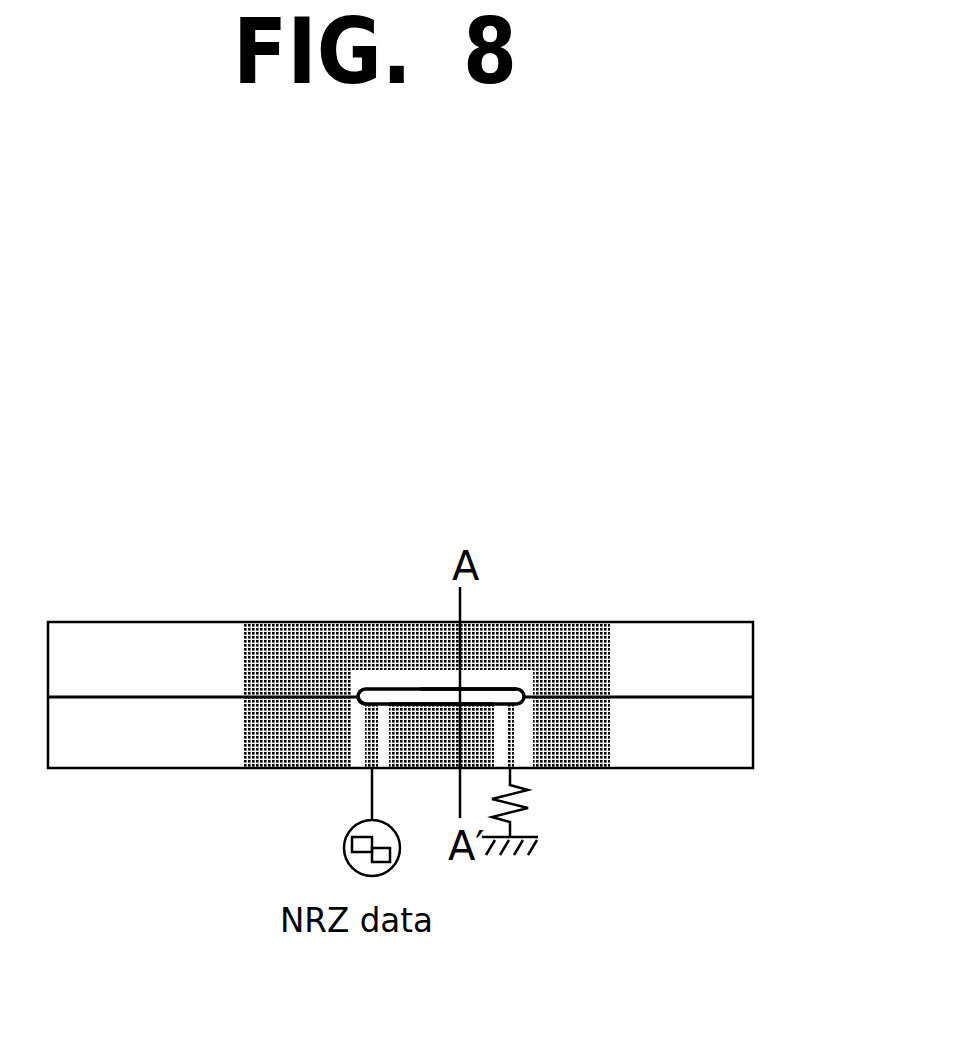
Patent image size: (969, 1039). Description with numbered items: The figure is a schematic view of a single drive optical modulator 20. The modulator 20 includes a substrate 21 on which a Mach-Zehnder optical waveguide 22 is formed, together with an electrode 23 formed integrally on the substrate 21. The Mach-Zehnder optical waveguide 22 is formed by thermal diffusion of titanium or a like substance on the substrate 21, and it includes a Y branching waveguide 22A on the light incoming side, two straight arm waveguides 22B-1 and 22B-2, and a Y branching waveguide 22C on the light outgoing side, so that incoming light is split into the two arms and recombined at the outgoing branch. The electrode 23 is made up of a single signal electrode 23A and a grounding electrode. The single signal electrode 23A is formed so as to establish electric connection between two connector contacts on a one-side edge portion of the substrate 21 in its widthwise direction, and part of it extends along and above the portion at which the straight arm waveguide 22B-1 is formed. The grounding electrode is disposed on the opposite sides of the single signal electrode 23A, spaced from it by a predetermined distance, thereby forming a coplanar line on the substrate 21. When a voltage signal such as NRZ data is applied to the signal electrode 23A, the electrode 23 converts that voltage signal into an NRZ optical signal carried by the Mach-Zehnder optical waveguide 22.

The single drive optical modulator 20 is at (686, 600).
The substrate 21 is at (737, 653).
The Mach-Zehnder optical waveguide 22 is at (400, 675).
The Y branching waveguide 22A is at (358, 705).
The straight arm waveguide 22B-1 is at (525, 688).
The straight arm waveguide 22B-2 is at (417, 707).
The Y branching waveguide 22C is at (527, 702).
The electrode 23 is at (507, 682).
The single signal electrode 23A is at (372, 748).